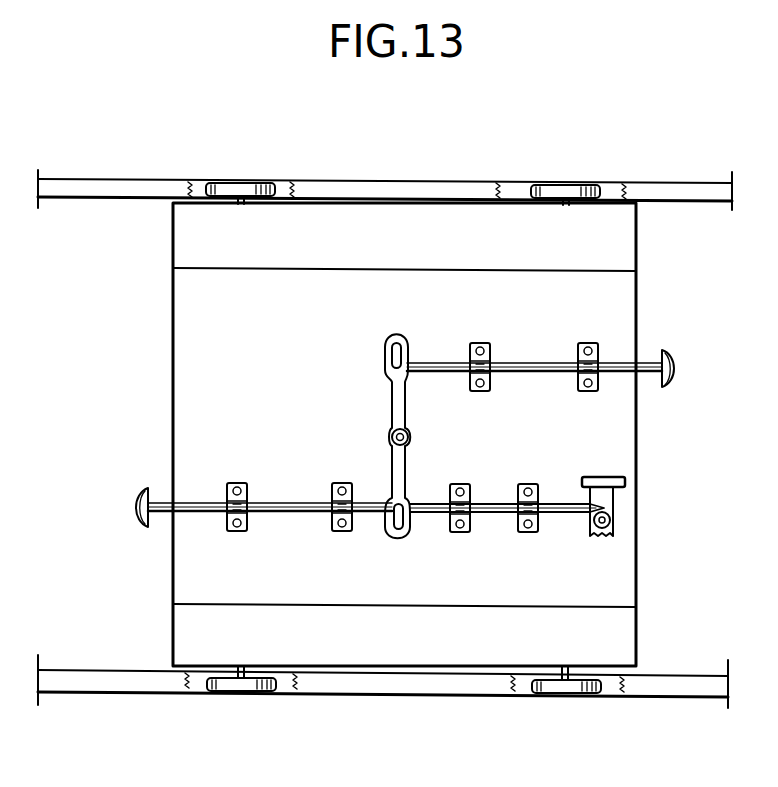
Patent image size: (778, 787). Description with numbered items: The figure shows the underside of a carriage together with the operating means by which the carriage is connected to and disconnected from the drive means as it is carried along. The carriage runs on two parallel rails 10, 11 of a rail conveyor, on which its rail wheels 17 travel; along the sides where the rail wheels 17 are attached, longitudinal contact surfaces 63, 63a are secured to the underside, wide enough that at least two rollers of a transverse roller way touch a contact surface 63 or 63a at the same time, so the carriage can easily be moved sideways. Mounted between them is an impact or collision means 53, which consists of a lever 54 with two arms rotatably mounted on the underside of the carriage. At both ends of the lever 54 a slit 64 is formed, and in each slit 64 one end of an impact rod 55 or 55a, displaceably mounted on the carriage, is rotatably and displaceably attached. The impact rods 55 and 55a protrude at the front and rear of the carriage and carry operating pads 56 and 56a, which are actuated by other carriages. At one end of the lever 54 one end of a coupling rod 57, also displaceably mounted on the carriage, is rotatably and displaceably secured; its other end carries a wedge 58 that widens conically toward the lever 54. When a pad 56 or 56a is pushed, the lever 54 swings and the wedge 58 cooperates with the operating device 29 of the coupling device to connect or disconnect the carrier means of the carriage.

The rail 10 is at (113, 187).
The rail 11 is at (100, 682).
The rail wheels 17 is at (237, 183).
The operating device 29 is at (614, 498).
The impact means 53 is at (410, 436).
The lever 54 is at (392, 398).
The impact rod 55 is at (527, 360).
The impact rod 55a is at (287, 512).
The operating pad 56 is at (676, 357).
The operating pad 56a is at (134, 507).
The coupling rod 57 is at (497, 513).
The wedge 58 is at (596, 522).
The contact surface 63 is at (408, 232).
The contact surface 63a is at (420, 650).
The slit 64 is at (405, 338).